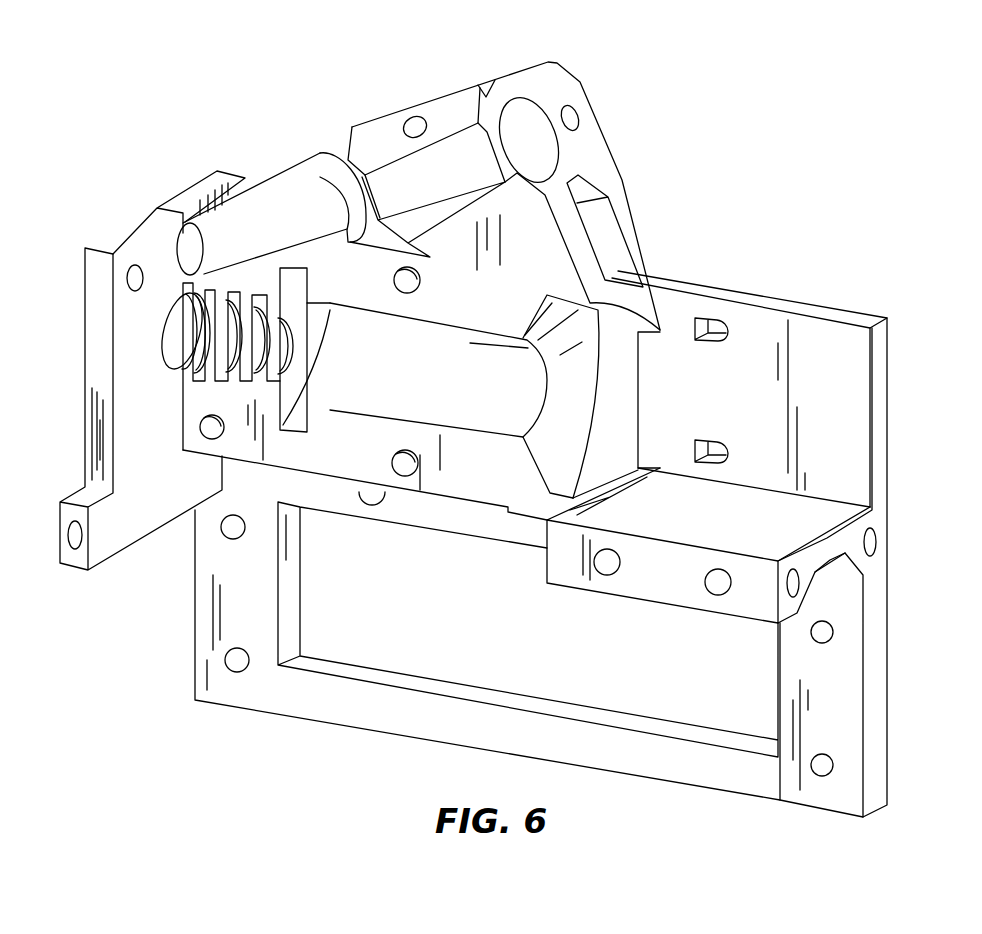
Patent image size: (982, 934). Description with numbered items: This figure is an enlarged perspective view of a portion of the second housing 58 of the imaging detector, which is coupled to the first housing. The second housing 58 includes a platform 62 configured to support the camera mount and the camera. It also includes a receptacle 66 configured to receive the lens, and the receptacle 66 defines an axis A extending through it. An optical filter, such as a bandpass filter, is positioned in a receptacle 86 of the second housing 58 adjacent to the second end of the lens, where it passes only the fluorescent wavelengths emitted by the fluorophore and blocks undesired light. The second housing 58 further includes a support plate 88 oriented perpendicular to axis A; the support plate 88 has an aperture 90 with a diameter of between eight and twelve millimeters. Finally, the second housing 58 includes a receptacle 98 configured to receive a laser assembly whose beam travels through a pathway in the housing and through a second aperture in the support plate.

The second housing 58 is at (562, 516).
The platform 62 is at (827, 538).
The receptacle 66 is at (465, 391).
The receptacle 86 is at (290, 392).
The support plate 88 is at (85, 330).
The aperture 90 is at (173, 367).
The receptacle 98 is at (522, 105).